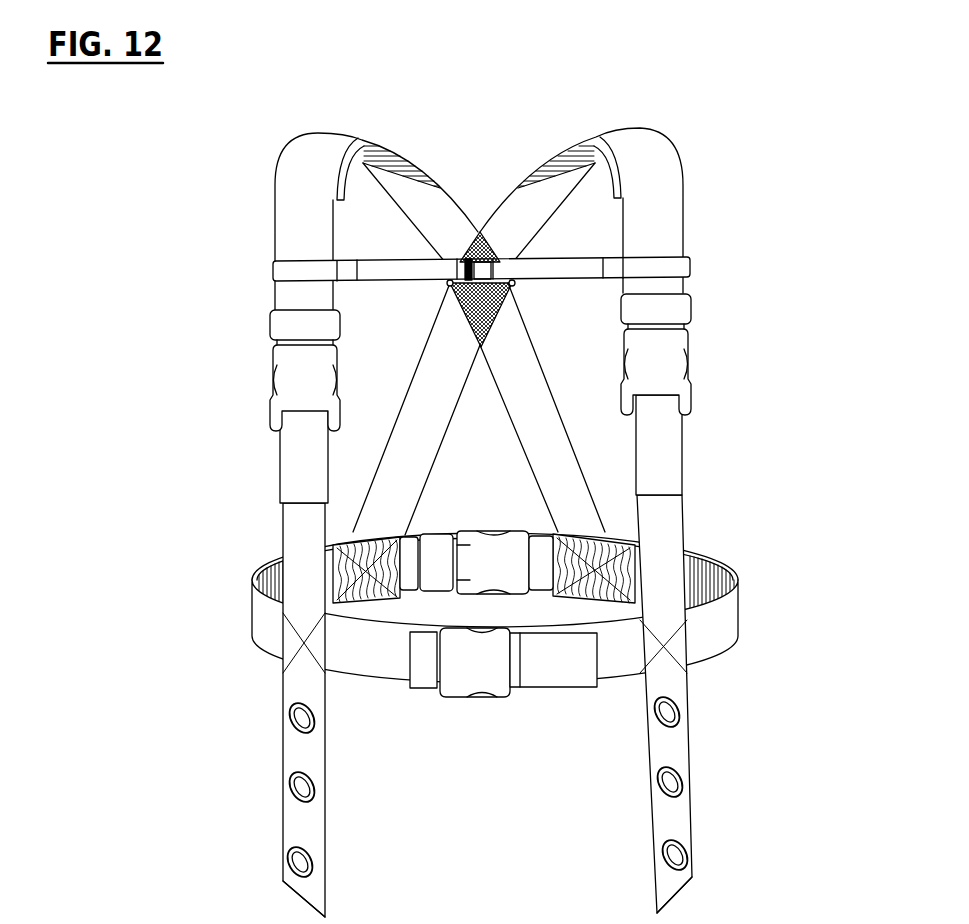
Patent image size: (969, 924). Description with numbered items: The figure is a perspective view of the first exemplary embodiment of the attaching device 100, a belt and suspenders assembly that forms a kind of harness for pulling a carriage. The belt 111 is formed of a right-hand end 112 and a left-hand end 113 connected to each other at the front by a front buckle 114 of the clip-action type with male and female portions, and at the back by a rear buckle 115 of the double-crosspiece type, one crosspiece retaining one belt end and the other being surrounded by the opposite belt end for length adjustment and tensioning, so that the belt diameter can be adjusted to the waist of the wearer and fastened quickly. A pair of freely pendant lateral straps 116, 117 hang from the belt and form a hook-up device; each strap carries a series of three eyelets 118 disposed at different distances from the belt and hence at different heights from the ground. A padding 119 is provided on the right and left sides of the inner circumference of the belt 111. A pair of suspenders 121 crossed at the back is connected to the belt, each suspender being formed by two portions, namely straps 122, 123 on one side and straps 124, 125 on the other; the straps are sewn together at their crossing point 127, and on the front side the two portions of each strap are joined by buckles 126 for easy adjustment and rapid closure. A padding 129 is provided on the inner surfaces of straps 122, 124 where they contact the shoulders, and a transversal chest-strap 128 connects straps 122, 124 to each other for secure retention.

The attaching device 100 is at (220, 249).
The belt 111 is at (236, 623).
The right-hand end 112 is at (265, 638).
The left-hand end 113 is at (718, 625).
The front buckle 114 is at (476, 664).
The rear buckle 115 is at (510, 563).
The lateral strap 116 is at (285, 880).
The lateral strap 117 is at (660, 892).
The eyelets 118 is at (283, 853).
The padding 119 is at (256, 580).
The suspenders 121 is at (433, 148).
The strap 122 is at (300, 172).
The strap 123 is at (297, 520).
The strap 124 is at (650, 175).
The strap 125 is at (670, 513).
The buckles 126 is at (302, 373).
The crossing point 127 is at (487, 243).
The chest-strap 128 is at (704, 268).
The padding 129 is at (378, 138).